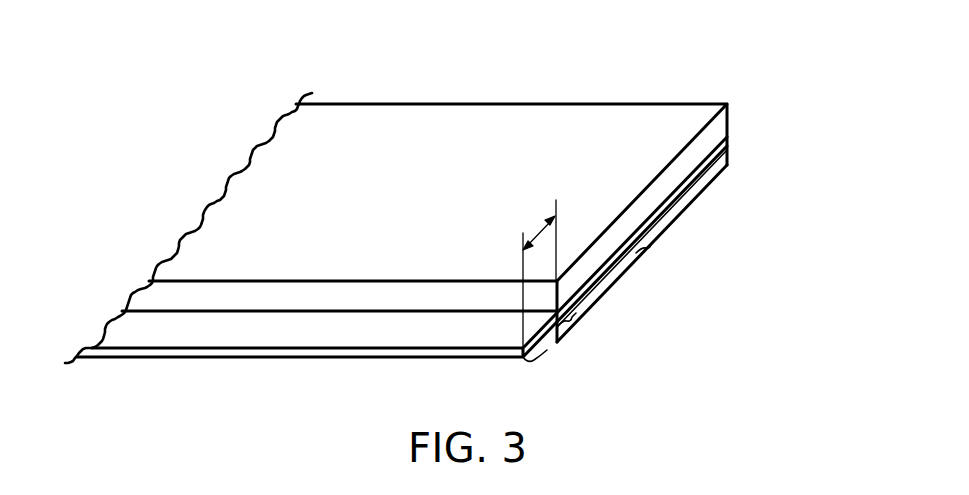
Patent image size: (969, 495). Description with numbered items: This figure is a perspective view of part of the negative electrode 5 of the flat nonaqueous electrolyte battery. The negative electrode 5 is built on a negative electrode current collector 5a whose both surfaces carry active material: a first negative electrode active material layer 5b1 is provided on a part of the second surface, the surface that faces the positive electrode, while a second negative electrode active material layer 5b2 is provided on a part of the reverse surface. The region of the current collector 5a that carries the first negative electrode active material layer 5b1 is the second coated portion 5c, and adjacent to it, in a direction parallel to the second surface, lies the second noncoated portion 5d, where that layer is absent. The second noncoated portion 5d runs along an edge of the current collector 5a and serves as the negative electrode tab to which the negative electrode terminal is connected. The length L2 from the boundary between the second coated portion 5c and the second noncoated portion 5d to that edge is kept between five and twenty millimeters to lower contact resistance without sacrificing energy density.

The negative electrode 5 is at (785, 53).
The negative electrode current collector 5a is at (718, 129).
The first negative electrode active material layer 5b1 is at (728, 120).
The second negative electrode active material layer 5b2 is at (728, 161).
The second coated portion 5c is at (642, 238).
The second noncoated portion 5d is at (548, 365).
The length from the boundary between the coated and noncoated portions to the edge L2 is at (537, 274).